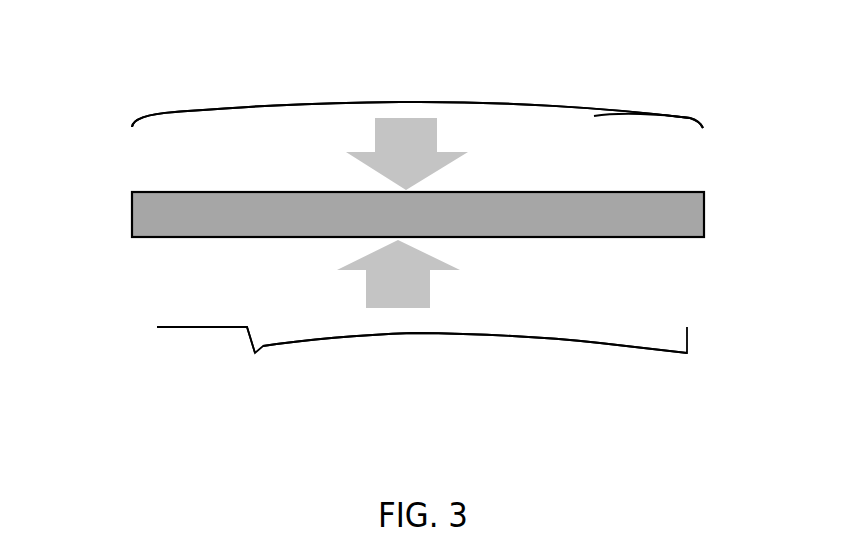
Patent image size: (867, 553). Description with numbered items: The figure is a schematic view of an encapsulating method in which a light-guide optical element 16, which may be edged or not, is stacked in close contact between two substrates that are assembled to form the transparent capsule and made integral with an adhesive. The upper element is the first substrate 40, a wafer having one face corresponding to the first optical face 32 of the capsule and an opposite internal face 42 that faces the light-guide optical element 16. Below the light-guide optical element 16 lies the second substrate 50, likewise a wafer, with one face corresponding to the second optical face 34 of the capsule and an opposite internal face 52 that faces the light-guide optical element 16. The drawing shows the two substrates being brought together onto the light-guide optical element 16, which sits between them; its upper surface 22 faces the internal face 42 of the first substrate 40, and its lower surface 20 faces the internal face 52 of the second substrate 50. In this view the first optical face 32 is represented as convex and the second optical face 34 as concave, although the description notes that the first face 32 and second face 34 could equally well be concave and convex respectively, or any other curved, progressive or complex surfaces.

The light-guide optical element 16 is at (683, 207).
The lower surface of substrate 20 is at (639, 240).
The upper surface of substrate 22 is at (622, 193).
The first optical face 32 is at (674, 115).
The second optical face 34 is at (624, 352).
The first substrate 40 is at (284, 90).
The internal face of first substrate 42 is at (594, 116).
The second substrate 50 is at (287, 357).
The internal face of second substrate 52 is at (210, 321).